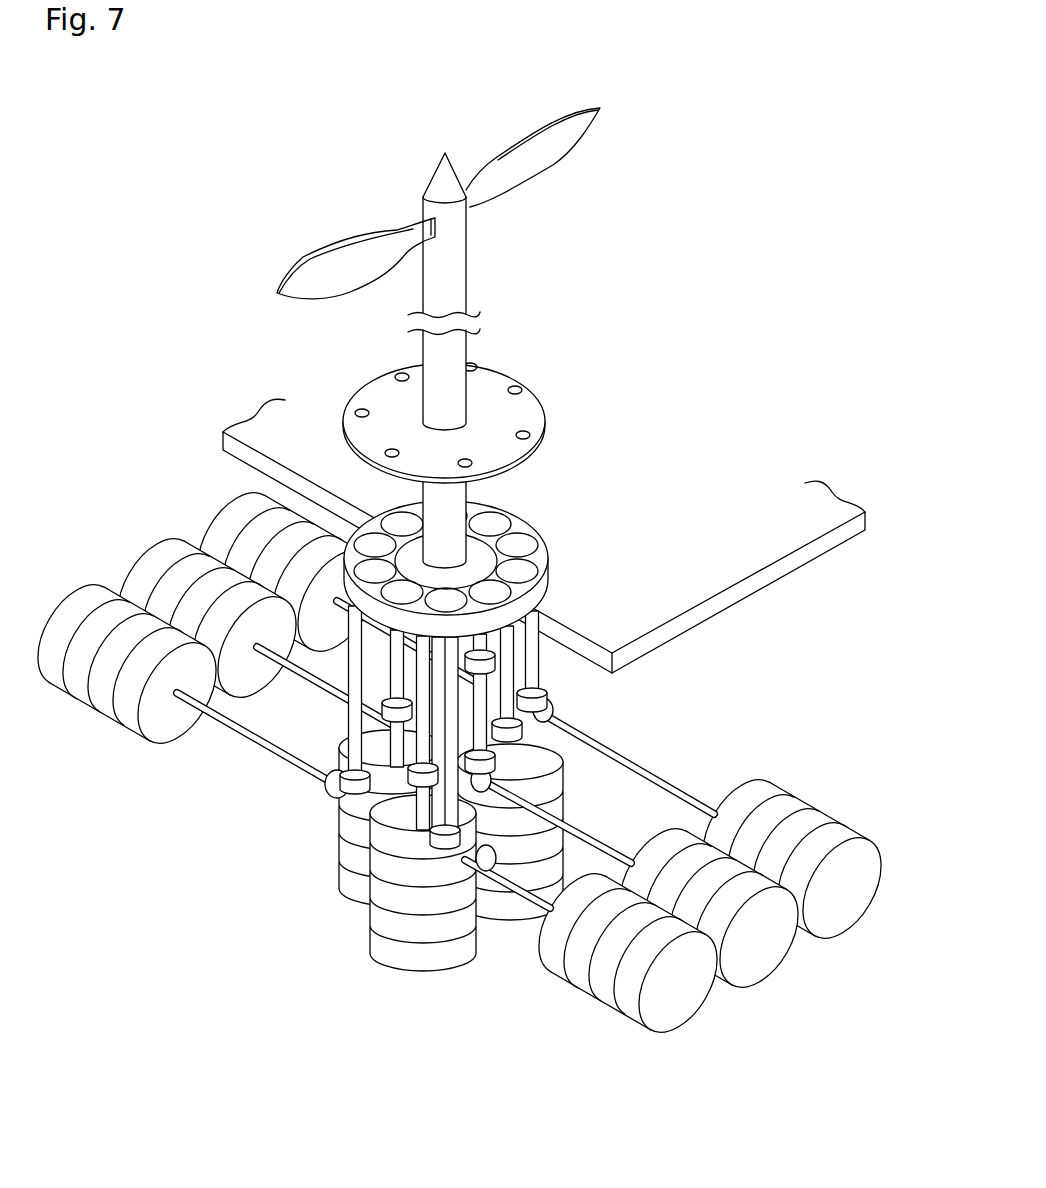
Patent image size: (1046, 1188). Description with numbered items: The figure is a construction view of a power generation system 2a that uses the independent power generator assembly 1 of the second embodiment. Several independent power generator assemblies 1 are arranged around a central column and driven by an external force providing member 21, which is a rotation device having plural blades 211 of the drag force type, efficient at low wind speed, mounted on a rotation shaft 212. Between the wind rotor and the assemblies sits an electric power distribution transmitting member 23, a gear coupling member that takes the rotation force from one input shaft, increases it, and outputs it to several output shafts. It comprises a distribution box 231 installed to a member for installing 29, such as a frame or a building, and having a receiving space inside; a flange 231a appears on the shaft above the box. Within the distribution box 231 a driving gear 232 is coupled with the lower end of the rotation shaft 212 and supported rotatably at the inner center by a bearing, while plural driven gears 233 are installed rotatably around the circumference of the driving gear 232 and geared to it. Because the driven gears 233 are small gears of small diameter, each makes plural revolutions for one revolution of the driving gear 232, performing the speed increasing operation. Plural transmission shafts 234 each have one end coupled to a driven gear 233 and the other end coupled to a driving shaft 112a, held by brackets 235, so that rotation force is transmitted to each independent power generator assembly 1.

The power generation system 2a is at (248, 36).
The independent power generator assembly 1 is at (451, 983).
The external force providing member 21 is at (622, 224).
The blade 211 is at (370, 260).
The rotation shaft 212 is at (457, 215).
The electric power distribution transmitting member 23 is at (618, 468).
The distribution box 231 is at (520, 640).
The flange 231a is at (527, 407).
The driving gear 232 is at (532, 537).
The driven gear 233 is at (535, 522).
The transmission shaft 234 is at (533, 663).
The clamp 235 is at (548, 716).
The member for installing 29 is at (723, 602).
The driving shaft 112a is at (603, 847).